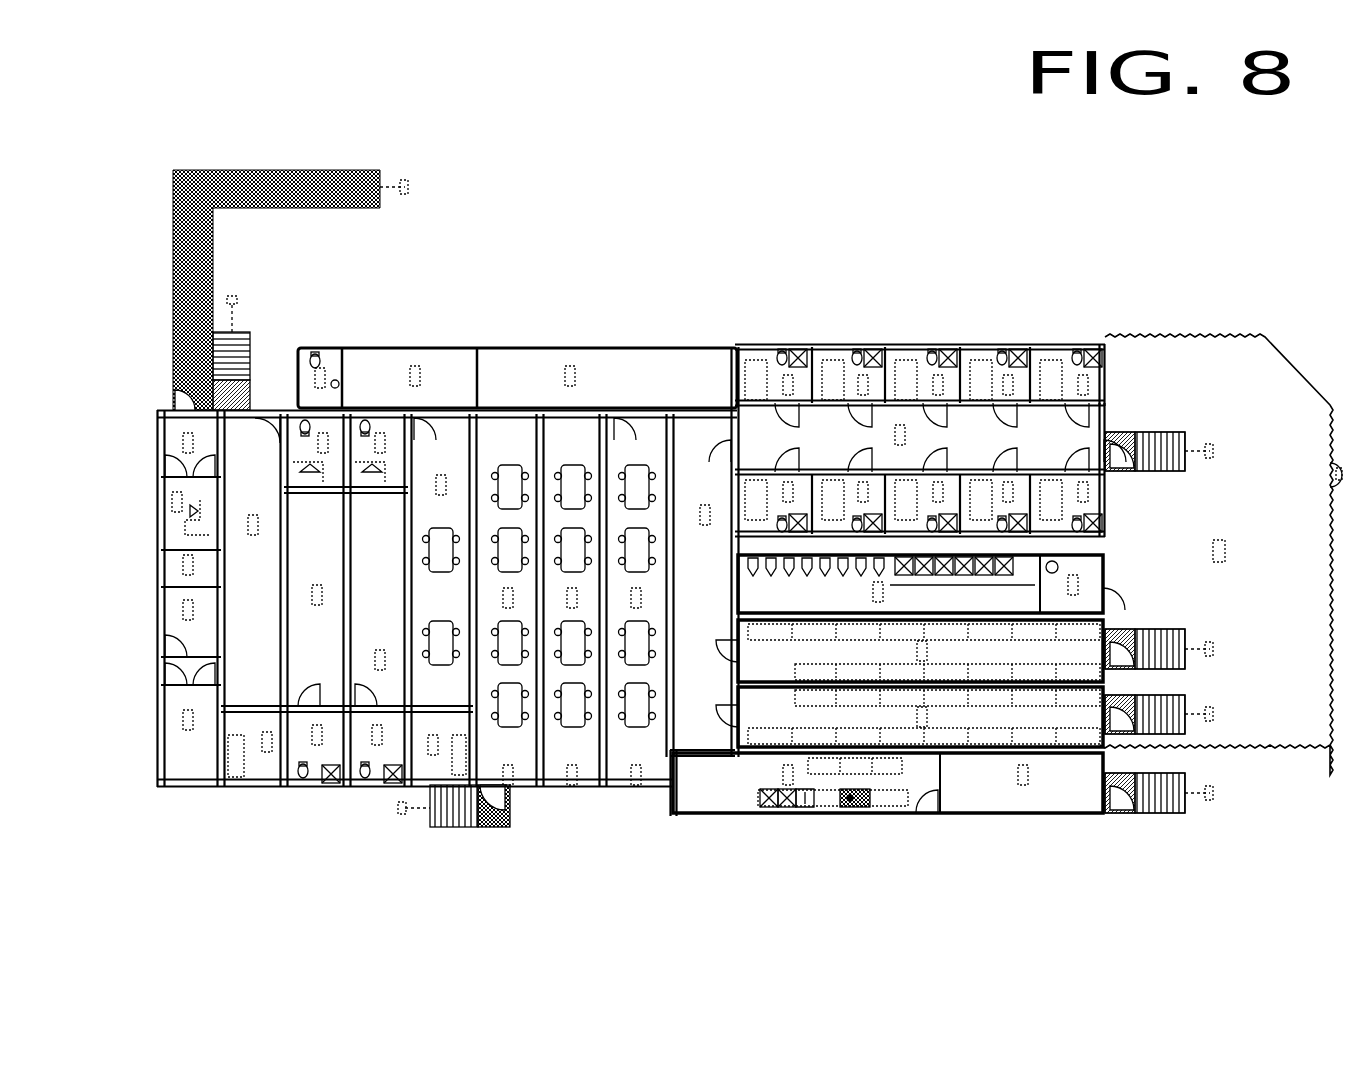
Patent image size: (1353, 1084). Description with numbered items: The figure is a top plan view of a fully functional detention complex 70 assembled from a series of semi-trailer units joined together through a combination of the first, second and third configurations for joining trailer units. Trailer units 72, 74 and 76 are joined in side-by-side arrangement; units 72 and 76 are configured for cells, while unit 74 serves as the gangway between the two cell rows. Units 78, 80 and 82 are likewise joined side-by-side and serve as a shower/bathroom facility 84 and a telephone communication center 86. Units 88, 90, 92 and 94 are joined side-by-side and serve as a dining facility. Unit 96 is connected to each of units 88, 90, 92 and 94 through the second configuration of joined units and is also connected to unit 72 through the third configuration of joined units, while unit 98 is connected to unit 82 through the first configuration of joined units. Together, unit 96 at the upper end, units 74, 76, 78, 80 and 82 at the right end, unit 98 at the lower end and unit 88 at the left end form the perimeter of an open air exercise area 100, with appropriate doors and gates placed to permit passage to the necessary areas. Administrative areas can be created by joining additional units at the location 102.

The detention complex 70 is at (819, 293).
The trailer unit 72 is at (977, 347).
The trailer unit 74 is at (1090, 440).
The trailer unit 76 is at (1095, 497).
The unit 78 is at (970, 580).
The unit 80 is at (1090, 645).
The unit 82 is at (1019, 697).
The shower/bathroom facility 84 is at (830, 606).
The telephone communication center 86 is at (783, 726).
The unit 88 is at (628, 780).
The unit 90 is at (570, 765).
The unit 92 is at (505, 760).
The unit 94 is at (455, 685).
The unit 96 is at (535, 347).
The unit 98 is at (740, 795).
The open air exercise area 100 is at (728, 577).
The location for administrative areas 102 is at (177, 805).